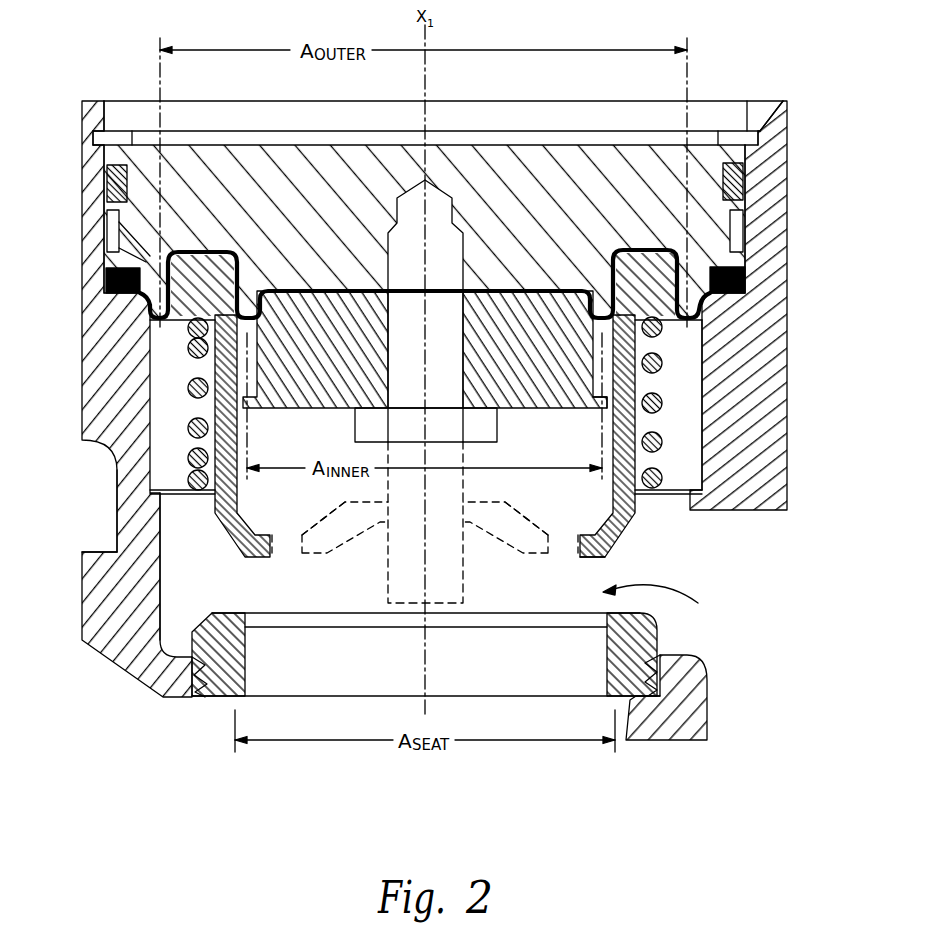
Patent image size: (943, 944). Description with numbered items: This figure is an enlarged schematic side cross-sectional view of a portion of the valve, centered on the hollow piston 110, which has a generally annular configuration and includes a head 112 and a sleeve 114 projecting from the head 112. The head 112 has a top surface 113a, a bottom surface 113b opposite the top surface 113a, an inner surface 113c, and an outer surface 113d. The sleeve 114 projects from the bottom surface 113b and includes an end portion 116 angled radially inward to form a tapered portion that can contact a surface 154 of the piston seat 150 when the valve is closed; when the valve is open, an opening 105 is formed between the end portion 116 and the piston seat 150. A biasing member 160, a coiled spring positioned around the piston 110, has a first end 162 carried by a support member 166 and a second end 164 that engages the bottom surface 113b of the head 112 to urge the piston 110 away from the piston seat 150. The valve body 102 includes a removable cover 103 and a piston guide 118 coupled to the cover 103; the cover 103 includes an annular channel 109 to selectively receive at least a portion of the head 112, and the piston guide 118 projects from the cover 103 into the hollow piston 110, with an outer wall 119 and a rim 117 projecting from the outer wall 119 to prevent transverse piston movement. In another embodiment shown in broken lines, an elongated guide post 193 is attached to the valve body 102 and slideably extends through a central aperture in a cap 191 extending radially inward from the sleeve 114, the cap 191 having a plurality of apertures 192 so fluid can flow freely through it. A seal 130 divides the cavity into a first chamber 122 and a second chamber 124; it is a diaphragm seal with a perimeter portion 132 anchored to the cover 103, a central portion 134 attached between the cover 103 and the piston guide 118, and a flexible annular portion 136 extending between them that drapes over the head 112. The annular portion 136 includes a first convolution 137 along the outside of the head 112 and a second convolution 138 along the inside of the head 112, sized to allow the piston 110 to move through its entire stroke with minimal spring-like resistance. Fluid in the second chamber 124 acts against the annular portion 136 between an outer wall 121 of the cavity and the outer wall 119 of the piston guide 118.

The valve body 102 is at (737, 140).
The removable cover 103 is at (580, 142).
The opening 105 is at (669, 600).
The annular channel 109 is at (648, 250).
The hollow piston 110 is at (705, 388).
The head 112 is at (242, 338).
The top surface 113a is at (736, 229).
The bottom surface 113b is at (705, 335).
The inner surface 113c is at (598, 337).
The outer surface 113d is at (714, 264).
The sleeve 114 is at (620, 417).
The end portion 116 is at (608, 546).
The rim 117 is at (245, 402).
The piston guide 118 is at (532, 408).
The outer wall 119 is at (183, 390).
The outer wall 121 is at (117, 482).
The first chamber 122 is at (325, 613).
The second chamber 124 is at (600, 312).
The seal 130 is at (522, 291).
The perimeter portion 132 is at (107, 278).
The central portion 134 is at (348, 291).
The annular portion 136 is at (205, 252).
The first convolution 137 is at (140, 298).
The second convolution 138 is at (268, 302).
The piston seat 150 is at (660, 640).
The surface 154 is at (610, 616).
The biasing member 160 is at (148, 373).
The first end 162 is at (117, 524).
The second end 164 is at (152, 338).
The support member 166 is at (172, 497).
The cap 191 is at (500, 540).
The apertures 192 is at (288, 530).
The guide post 193 is at (372, 563).